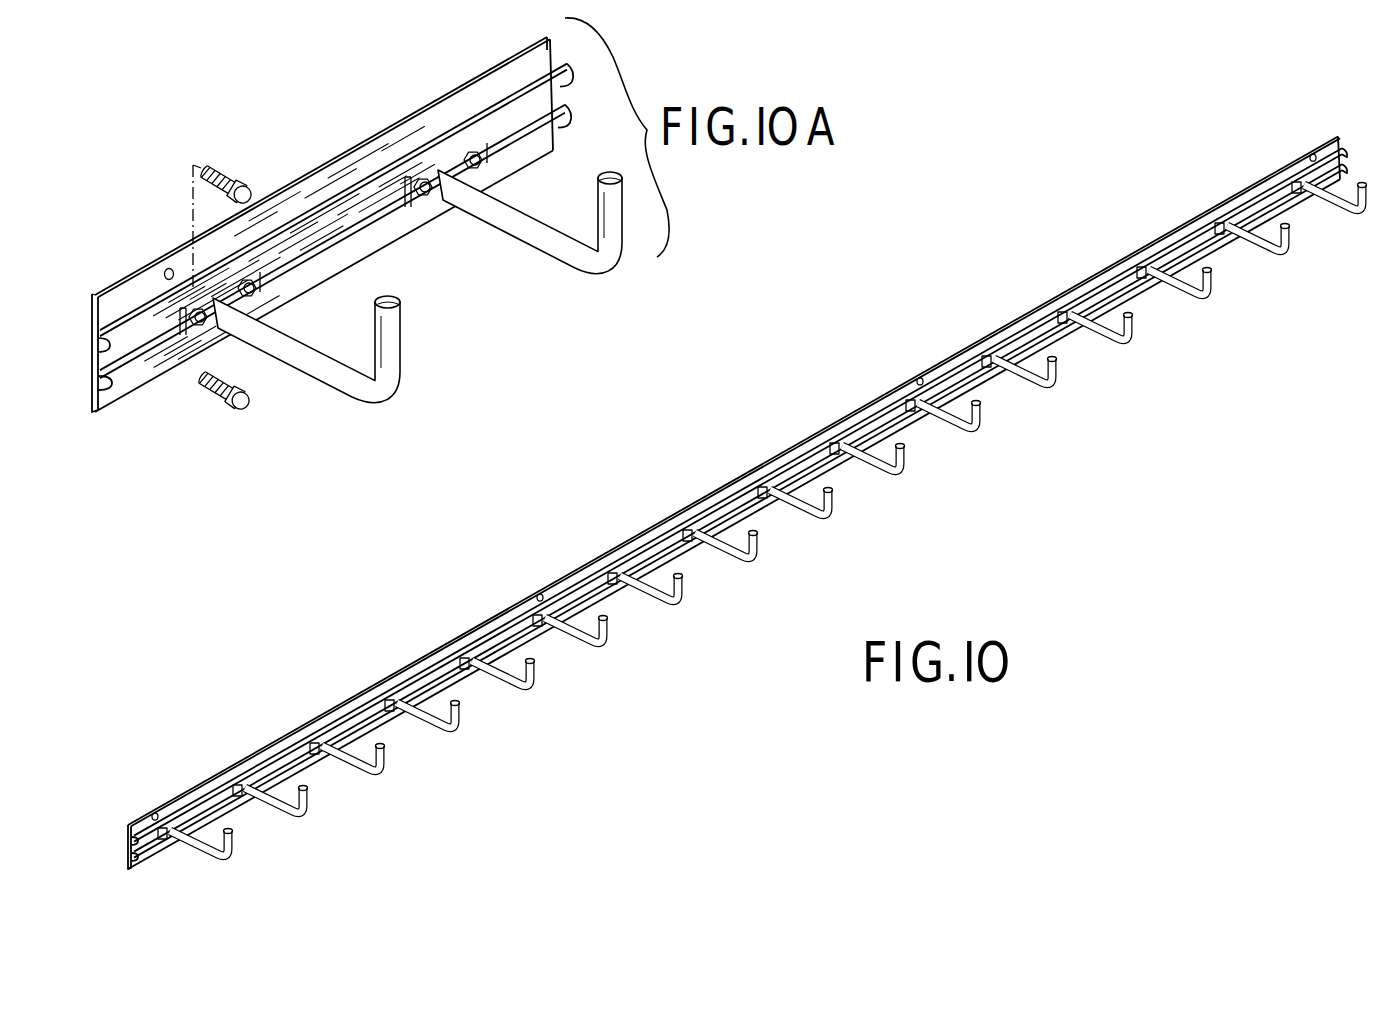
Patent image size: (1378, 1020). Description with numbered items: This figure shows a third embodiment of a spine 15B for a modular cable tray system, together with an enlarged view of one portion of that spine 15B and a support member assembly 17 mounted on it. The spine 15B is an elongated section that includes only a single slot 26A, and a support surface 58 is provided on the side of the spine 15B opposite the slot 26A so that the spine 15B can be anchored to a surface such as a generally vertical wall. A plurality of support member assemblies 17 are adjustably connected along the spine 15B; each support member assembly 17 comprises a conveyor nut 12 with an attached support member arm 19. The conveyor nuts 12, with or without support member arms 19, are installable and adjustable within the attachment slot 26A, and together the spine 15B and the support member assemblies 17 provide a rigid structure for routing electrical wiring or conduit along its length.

In FIG. 10A, the spine 15B is at (313, 183).
In FIG. 10, the spine 15B is at (812, 442).
In FIG. 10A, the support member assembly 17 is at (642, 253).
In FIG. 10, the support member assembly 17 is at (578, 650).
In FIG. 10A, the support member arm 19 is at (400, 348).
In FIG. 10A, the conveyor nut 12 is at (214, 314).
In FIG. 10A, the support surface 58 is at (74, 320).
In FIG. 10, the support surface 58 is at (127, 836).
In FIG. 10A, the slot 26A is at (90, 367).